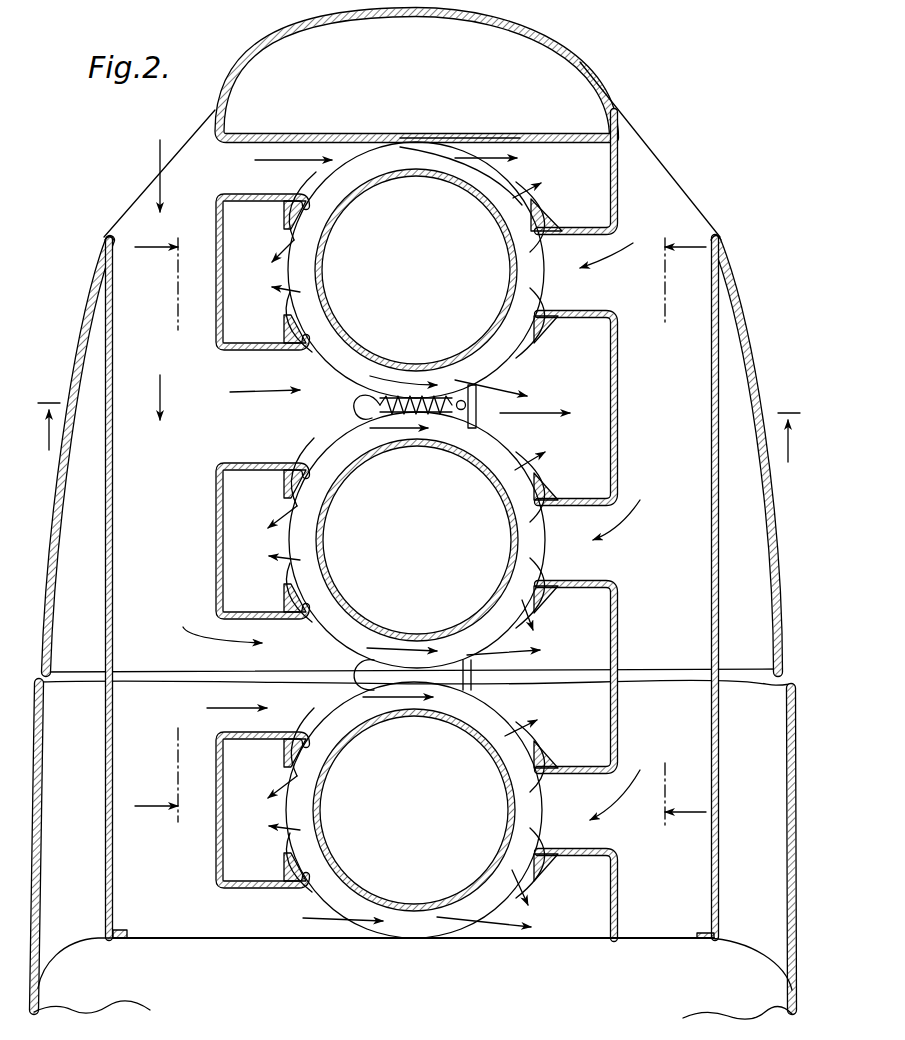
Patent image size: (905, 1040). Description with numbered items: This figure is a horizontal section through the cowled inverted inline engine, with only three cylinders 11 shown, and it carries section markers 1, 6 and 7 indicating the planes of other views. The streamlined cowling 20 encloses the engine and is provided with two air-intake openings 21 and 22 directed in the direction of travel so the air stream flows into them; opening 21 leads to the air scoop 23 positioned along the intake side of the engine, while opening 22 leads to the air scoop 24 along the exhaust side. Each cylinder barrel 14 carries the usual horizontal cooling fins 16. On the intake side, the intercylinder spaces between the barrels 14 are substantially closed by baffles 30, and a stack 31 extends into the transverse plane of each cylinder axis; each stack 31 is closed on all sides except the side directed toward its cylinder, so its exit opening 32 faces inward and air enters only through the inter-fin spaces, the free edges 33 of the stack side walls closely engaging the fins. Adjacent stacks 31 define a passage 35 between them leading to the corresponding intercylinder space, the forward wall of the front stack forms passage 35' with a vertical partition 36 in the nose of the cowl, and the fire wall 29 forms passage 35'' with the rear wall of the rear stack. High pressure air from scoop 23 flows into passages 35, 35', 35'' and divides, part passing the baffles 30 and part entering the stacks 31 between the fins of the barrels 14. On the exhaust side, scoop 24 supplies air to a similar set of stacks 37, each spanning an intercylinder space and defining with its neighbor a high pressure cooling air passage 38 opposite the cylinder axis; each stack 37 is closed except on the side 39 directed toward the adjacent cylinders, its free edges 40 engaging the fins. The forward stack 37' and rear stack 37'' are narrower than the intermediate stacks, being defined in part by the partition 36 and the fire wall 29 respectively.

The cylinder 11 is at (338, 345).
The cylinder barrel 14 is at (462, 142).
The cooling fins 16 is at (503, 178).
The cowling 20 is at (746, 284).
The air-intake opening 21 is at (138, 226).
The air-intake opening 22 is at (633, 144).
The air scoop 23 is at (143, 304).
The air scoop 24 is at (688, 351).
The fire wall 29 is at (170, 953).
The baffle 30 is at (360, 394).
The stack 31 is at (240, 305).
The exit opening 32 is at (270, 277).
The free edges 33 is at (302, 196).
The passage 35 is at (230, 563).
The passage 35' is at (246, 153).
The passage 35'' is at (409, 945).
The vertical partition 36 is at (308, 136).
The stack 37 is at (601, 542).
The forward stack 37' is at (599, 171).
The rear stack 37'' is at (607, 895).
The high pressure cooling air passage 38 is at (583, 297).
The open side 39 is at (524, 378).
The free edges 40 is at (533, 338).
The section line 1- 1 is at (419, 421).
The section line 6- 6 is at (165, 531).
The section line 7- 7 is at (676, 533).